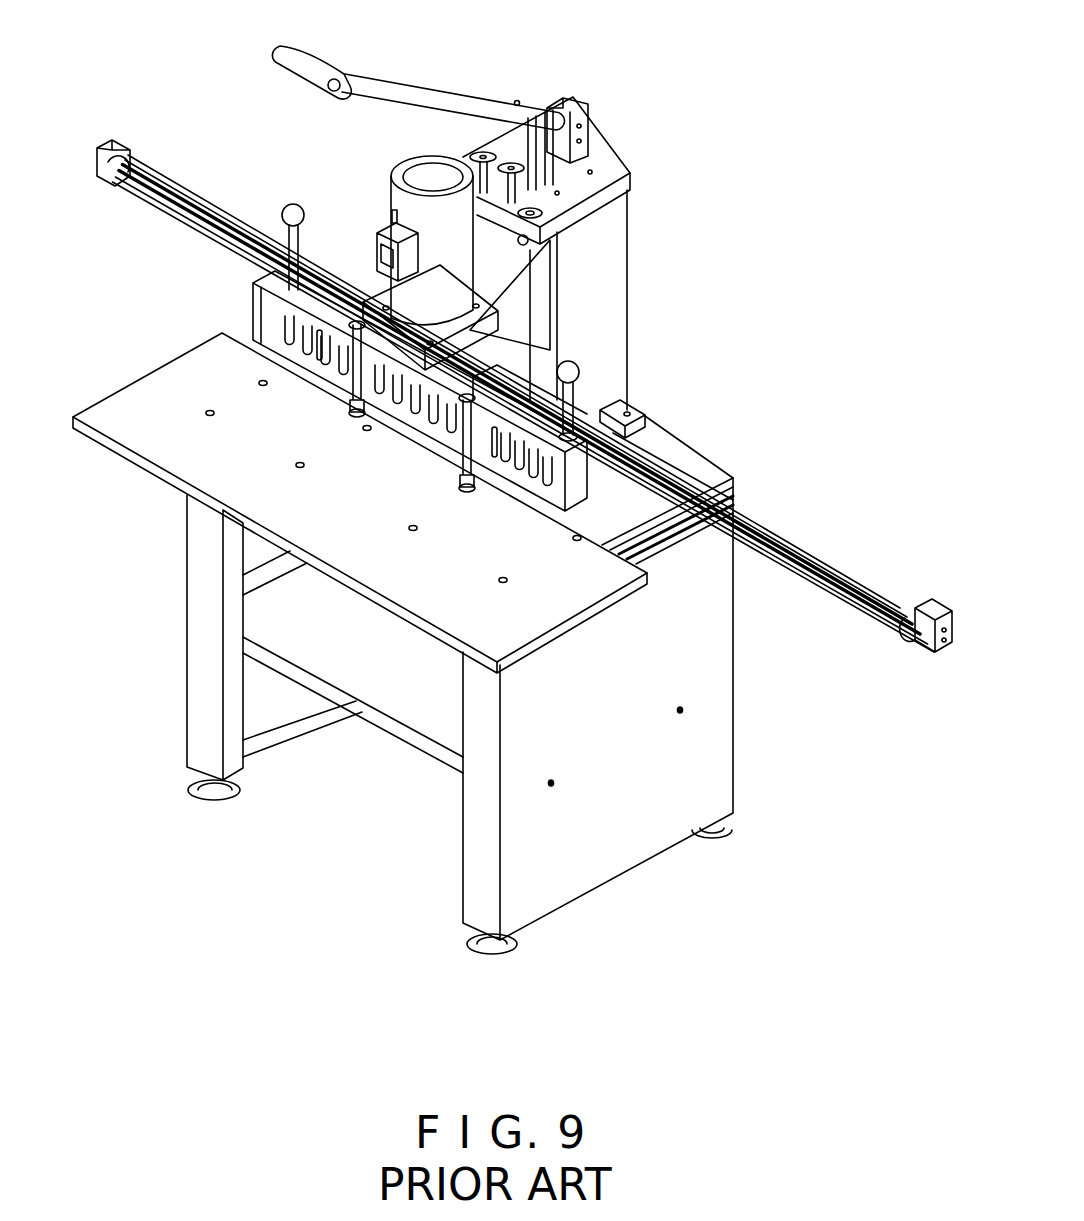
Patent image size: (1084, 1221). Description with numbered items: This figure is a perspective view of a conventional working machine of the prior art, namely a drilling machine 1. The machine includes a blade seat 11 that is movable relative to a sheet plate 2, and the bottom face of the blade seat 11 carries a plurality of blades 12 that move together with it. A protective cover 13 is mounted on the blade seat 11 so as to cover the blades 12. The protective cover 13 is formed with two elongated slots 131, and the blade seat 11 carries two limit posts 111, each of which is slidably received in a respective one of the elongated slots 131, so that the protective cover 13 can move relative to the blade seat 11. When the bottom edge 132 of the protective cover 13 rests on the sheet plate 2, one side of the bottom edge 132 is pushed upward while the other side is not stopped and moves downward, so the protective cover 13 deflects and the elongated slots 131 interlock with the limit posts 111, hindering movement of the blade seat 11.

The drilling machine 1 is at (648, 356).
The sheet plate 2 is at (143, 365).
The blade seat 11 is at (517, 400).
The limit posts 111 is at (512, 405).
The blades 12 is at (431, 716).
The protective cover 13 is at (300, 318).
The elongated slots 131 is at (507, 420).
The bottom edge 132 is at (533, 505).